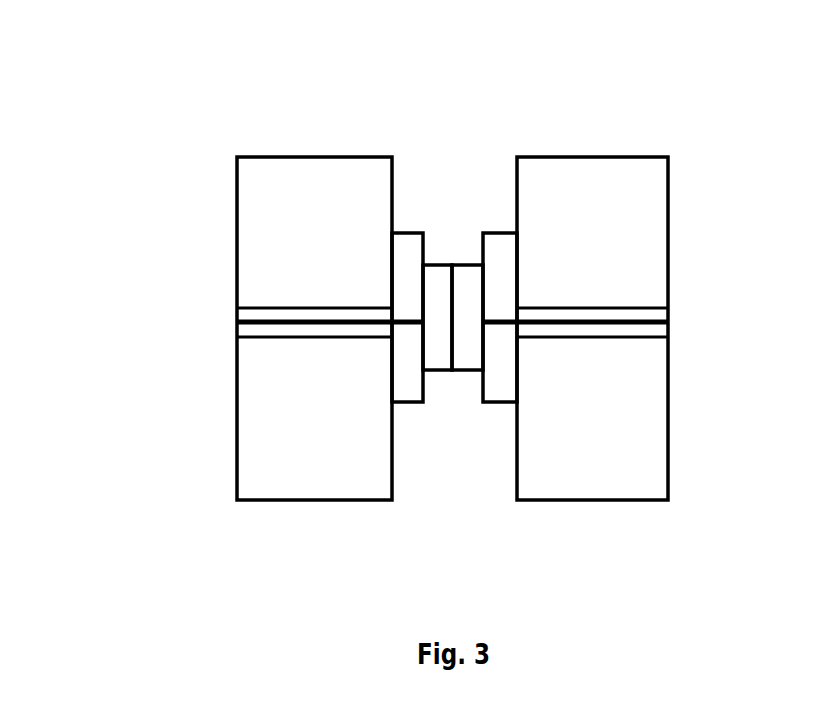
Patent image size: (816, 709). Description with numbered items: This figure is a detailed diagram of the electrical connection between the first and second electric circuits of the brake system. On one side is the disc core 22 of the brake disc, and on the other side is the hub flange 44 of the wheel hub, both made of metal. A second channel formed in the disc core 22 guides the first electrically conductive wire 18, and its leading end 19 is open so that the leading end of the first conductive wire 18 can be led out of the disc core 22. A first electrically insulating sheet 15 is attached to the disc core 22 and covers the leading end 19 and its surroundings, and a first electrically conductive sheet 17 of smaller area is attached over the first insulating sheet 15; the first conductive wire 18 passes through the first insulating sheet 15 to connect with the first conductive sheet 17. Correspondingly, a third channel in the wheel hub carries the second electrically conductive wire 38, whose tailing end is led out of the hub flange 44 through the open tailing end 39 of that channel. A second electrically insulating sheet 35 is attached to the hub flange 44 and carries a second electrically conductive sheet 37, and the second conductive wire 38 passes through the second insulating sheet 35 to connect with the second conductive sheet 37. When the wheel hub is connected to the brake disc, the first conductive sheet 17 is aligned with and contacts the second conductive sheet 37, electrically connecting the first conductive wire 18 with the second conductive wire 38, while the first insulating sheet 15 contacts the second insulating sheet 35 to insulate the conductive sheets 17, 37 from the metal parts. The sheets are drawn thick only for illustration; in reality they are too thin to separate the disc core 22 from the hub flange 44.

The disc core 22 is at (277, 195).
The hub flange 44 is at (628, 202).
The leading end of the second channel 19 is at (317, 305).
The tailing end of the third channel 39 is at (610, 305).
The first electrically conductive wire 18 is at (247, 330).
The second electrically conductive wire 38 is at (643, 328).
The first electrically insulating sheet 15 is at (405, 260).
The second electrically insulating sheet 35 is at (501, 378).
The first electrically conductive sheet 17 is at (435, 343).
The second electrically conductive sheet 37 is at (463, 303).